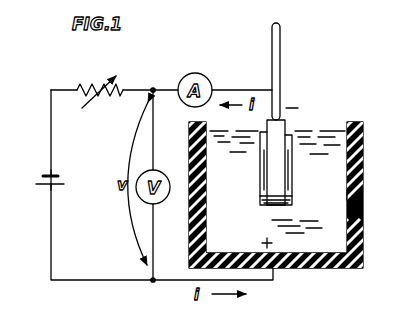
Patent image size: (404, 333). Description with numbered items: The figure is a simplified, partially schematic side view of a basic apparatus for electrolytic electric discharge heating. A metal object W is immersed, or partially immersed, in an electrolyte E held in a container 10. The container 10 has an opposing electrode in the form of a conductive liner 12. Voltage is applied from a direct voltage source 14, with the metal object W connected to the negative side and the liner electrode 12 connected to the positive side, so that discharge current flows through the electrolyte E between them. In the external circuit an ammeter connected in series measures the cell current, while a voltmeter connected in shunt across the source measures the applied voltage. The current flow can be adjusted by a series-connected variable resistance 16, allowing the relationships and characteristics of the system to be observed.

The container 10 is at (368, 157).
The conductive liner 12 is at (341, 196).
The direct voltage source 14 is at (43, 176).
The variable resistance 16 is at (85, 88).
The metal object W is at (278, 163).
The electrolyte E is at (336, 232).